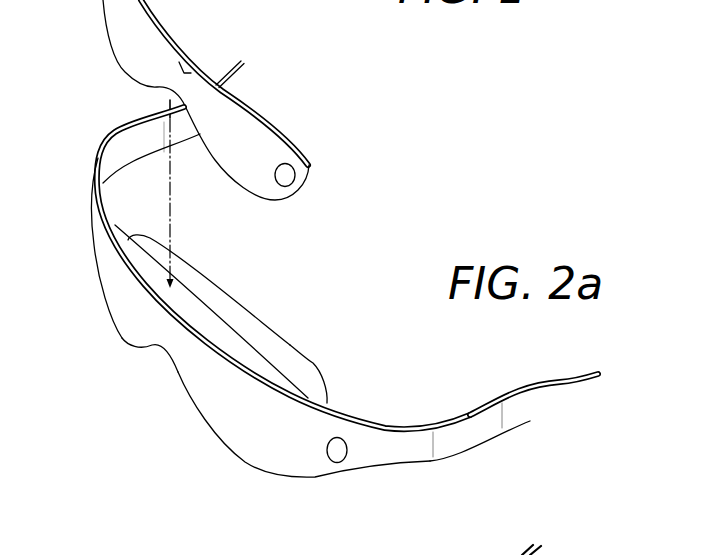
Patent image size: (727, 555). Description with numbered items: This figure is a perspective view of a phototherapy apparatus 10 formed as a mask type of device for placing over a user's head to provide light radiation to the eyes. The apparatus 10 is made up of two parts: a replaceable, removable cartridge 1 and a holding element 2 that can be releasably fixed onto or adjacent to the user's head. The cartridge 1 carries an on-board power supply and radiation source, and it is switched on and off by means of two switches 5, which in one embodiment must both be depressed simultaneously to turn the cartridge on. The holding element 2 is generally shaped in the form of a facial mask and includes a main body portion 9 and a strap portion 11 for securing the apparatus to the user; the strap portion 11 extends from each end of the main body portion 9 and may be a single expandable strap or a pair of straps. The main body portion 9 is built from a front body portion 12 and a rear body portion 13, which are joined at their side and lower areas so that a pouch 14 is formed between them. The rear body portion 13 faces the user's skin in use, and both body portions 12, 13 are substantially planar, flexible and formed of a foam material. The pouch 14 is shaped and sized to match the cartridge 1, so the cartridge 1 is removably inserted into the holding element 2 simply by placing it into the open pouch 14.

The cartridge 1 is at (237, 121).
The holding element 2 is at (253, 447).
The switches 5 is at (290, 180).
The main body portion 9 is at (138, 384).
The phototherapy apparatus 10 is at (391, 155).
The strap portion 11 is at (509, 443).
The front body portion 12 is at (80, 238).
The rear body portion 13 is at (316, 353).
The pouch 14 is at (238, 336).